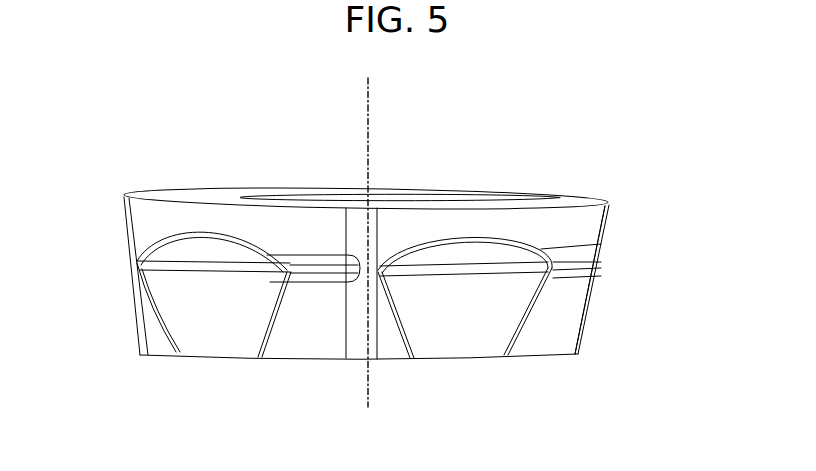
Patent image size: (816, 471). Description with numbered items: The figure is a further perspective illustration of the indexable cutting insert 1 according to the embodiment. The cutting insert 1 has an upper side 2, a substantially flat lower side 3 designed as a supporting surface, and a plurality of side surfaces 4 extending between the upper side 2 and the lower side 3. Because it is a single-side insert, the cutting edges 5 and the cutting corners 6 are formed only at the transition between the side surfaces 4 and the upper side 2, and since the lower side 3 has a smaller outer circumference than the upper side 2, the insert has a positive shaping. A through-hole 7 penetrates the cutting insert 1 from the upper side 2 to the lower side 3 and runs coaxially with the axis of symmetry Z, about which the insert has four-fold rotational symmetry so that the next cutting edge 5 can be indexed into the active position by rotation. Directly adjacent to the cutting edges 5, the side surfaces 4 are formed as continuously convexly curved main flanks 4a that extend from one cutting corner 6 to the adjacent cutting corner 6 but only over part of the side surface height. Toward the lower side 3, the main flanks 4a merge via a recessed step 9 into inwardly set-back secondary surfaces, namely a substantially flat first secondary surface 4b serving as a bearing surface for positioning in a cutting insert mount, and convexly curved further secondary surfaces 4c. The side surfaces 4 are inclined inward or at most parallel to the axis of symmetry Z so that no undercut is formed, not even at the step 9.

The indexable cutting insert 1 is at (393, 249).
The upper side 2 is at (522, 200).
The lower side 3 is at (544, 364).
The side surfaces 4 is at (198, 329).
The main flanks 4a is at (220, 218).
The first secondary surface 4b is at (471, 324).
The further secondary surfaces 4c is at (296, 343).
The cutting edges 5 is at (517, 210).
The cutting corners 6 is at (355, 212).
The through-hole 7 is at (418, 200).
The step 9 is at (567, 265).
The axis of symmetry Z is at (368, 140).